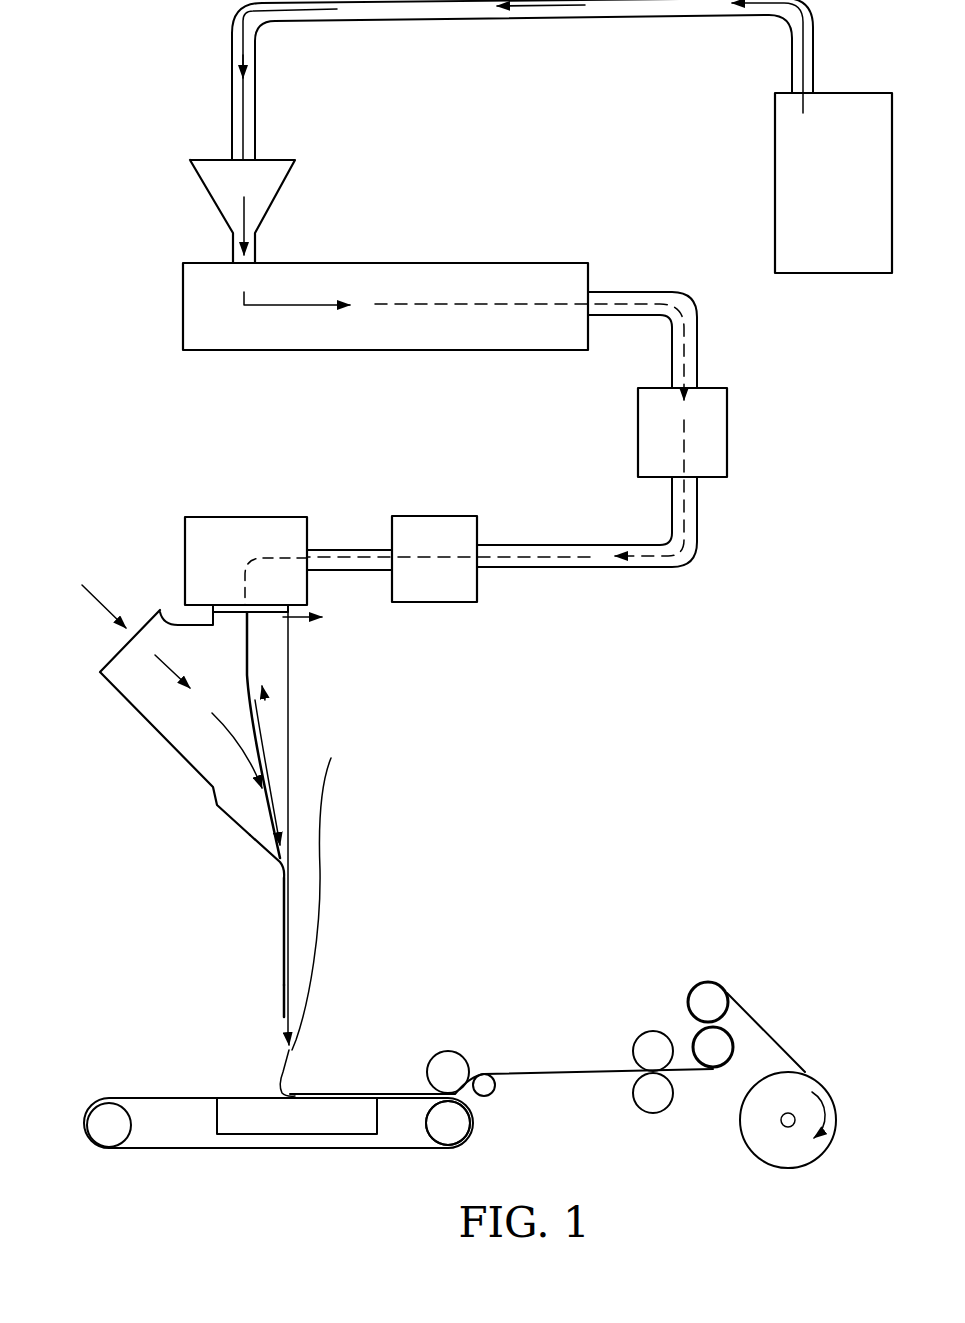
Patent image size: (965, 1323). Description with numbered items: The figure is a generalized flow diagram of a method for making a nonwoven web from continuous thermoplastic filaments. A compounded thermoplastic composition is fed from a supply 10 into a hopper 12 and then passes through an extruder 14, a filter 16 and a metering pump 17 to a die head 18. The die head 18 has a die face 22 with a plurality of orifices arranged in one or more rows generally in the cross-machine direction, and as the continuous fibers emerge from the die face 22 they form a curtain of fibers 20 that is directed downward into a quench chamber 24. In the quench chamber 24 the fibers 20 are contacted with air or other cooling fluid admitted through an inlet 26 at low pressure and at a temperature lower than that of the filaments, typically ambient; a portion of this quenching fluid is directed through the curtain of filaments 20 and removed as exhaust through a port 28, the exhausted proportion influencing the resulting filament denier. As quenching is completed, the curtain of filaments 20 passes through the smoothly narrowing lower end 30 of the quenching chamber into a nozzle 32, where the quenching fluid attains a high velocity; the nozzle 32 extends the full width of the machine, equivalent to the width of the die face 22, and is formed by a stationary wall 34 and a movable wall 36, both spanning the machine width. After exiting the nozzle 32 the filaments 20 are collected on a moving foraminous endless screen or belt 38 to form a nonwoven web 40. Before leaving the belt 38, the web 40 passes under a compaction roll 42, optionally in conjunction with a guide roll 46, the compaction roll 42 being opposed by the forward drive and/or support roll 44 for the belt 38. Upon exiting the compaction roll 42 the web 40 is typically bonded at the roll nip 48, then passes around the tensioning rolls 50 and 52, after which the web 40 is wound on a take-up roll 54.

The supply 10 is at (815, 199).
The hopper 12 is at (218, 194).
The extruder 14 is at (422, 297).
The filter 16 is at (645, 452).
The metering pump 17 is at (417, 551).
The die head 18 is at (200, 557).
The curtain of fibers 20 is at (266, 692).
The die face 22 is at (268, 622).
The quench chamber 24 is at (195, 674).
The inlet 26 is at (133, 635).
The port 28 is at (316, 628).
The smoothly narrowing lower end 30 is at (250, 832).
The nozzle 32 is at (283, 1022).
The stationary wall 34 is at (296, 945).
The movable wall 36 is at (274, 928).
The belt 38 is at (157, 1098).
The nonwoven web 40 is at (343, 1094).
The compaction roll 42 is at (450, 1060).
The forward drive and/or support roll 44 is at (463, 1130).
The guide roll 46 is at (492, 1090).
The roll nip 48 is at (612, 1058).
The tensioning roll 50 is at (709, 992).
The tensioning roll 52 is at (720, 1045).
The take-up roll 54 is at (758, 1135).